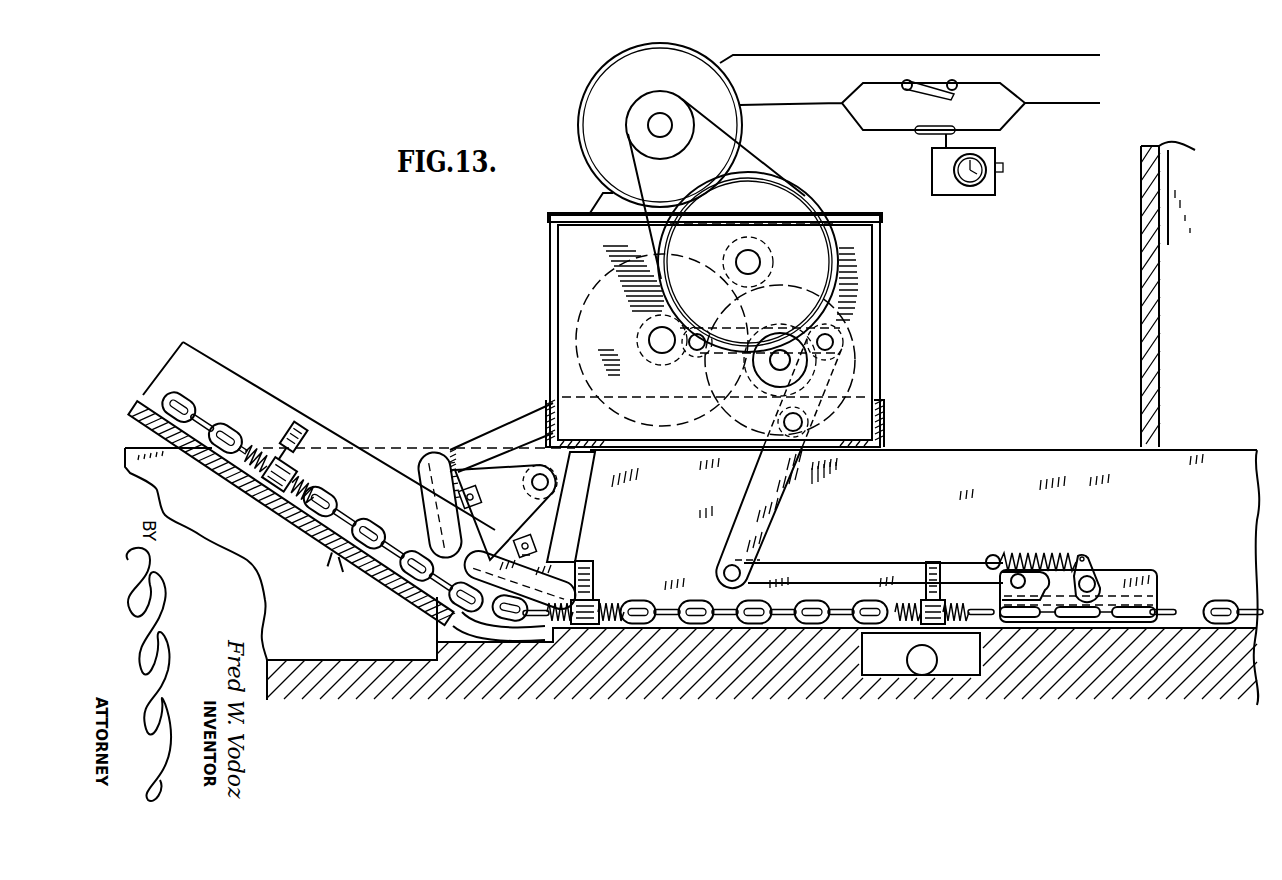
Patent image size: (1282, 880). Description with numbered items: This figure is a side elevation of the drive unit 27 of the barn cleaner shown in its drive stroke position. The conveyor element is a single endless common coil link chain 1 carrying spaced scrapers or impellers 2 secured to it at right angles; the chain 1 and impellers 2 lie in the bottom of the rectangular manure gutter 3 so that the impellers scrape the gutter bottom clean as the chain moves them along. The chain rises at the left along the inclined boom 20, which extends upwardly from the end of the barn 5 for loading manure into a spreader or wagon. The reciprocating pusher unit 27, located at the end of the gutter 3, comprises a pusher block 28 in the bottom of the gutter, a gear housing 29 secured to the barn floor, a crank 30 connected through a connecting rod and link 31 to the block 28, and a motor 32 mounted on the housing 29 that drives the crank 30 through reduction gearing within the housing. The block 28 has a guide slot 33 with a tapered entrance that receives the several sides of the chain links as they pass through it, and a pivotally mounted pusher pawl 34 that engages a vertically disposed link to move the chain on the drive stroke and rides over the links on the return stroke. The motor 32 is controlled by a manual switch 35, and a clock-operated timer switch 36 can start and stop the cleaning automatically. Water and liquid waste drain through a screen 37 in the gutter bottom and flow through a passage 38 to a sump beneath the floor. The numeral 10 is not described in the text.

The endless common coil link chain 1 is at (641, 606).
The scrapers or impellers 2 is at (303, 430).
The manure gutter 3 is at (1002, 469).
The barn 5 is at (1140, 262).
The pivoted arm 10 is at (433, 455).
The boom 20 is at (240, 368).
The reciprocating pusher unit 27 is at (722, 309).
The pusher block 28 is at (1143, 571).
The gear housing 29 is at (566, 273).
The crank 30 is at (689, 367).
The connecting rod and link 31 is at (765, 327).
The motor 32 is at (603, 69).
The guide slot 33 is at (1107, 606).
The pusher pawl 34 is at (1066, 596).
The manual switch 35 is at (922, 94).
The timer switch 36 is at (926, 136).
The screen 37 is at (862, 666).
The passage 38 is at (932, 683).